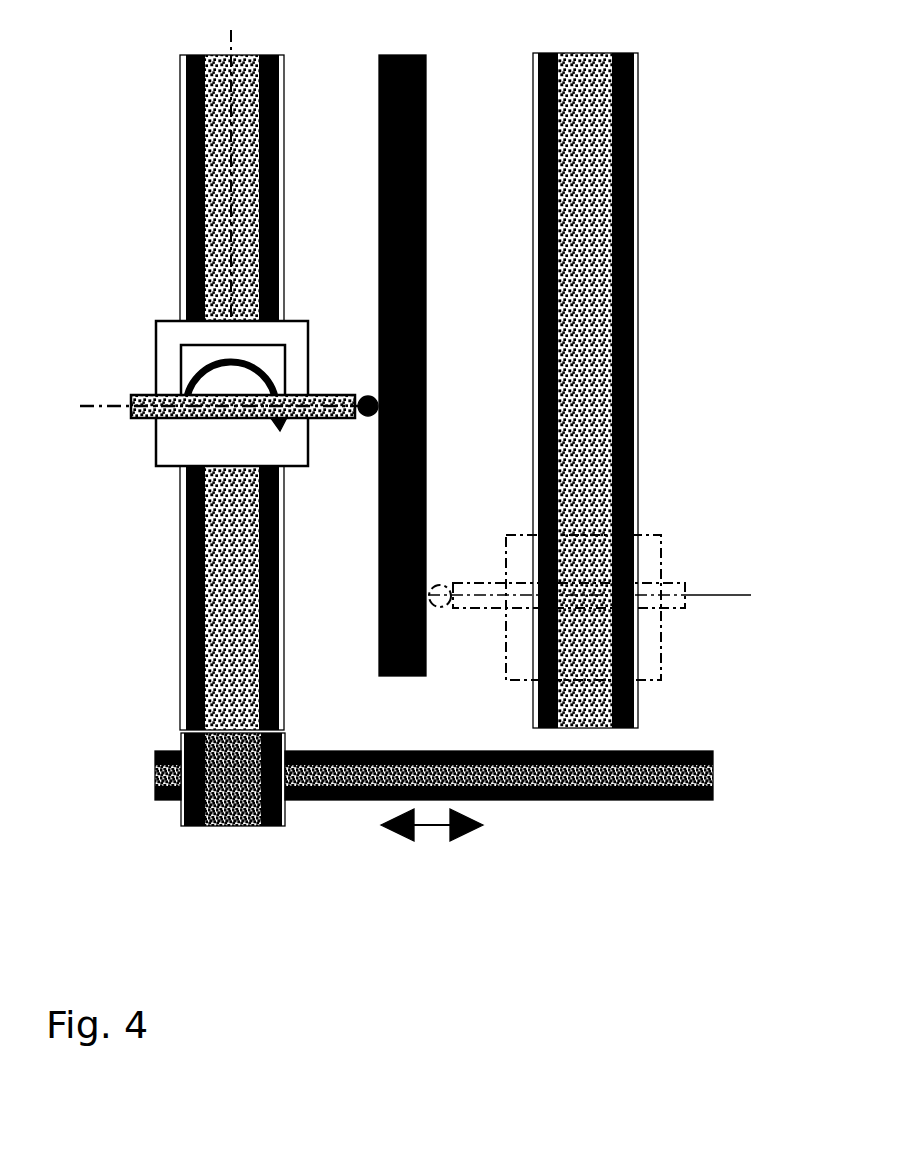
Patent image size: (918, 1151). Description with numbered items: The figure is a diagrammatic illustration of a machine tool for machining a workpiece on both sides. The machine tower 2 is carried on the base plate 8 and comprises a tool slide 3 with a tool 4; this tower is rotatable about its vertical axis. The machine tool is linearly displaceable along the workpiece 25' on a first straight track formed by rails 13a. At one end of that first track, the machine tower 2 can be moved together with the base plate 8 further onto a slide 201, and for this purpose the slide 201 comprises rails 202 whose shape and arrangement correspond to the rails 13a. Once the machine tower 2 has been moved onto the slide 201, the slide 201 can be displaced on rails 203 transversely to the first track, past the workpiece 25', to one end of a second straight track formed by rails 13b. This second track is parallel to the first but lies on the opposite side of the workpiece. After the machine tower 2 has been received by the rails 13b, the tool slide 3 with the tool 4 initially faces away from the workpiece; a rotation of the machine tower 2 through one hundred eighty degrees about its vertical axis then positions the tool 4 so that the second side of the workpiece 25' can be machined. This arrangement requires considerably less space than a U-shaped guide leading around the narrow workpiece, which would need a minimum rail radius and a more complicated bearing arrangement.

The machine tower 2 is at (253, 358).
The tool slide 3 is at (137, 397).
The tool 4 is at (357, 410).
The base plate 8 is at (163, 335).
The rails 13a is at (277, 577).
The rails 13b is at (627, 462).
The workpiece 25' is at (439, 365).
The slide 201 is at (217, 817).
The rails 202 is at (275, 805).
The rails 203 is at (615, 790).